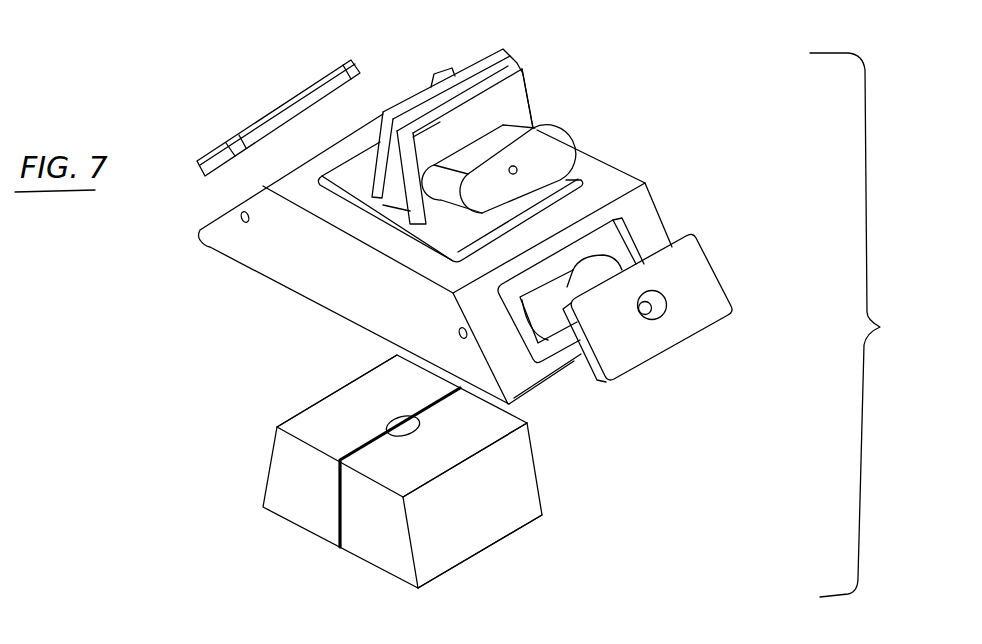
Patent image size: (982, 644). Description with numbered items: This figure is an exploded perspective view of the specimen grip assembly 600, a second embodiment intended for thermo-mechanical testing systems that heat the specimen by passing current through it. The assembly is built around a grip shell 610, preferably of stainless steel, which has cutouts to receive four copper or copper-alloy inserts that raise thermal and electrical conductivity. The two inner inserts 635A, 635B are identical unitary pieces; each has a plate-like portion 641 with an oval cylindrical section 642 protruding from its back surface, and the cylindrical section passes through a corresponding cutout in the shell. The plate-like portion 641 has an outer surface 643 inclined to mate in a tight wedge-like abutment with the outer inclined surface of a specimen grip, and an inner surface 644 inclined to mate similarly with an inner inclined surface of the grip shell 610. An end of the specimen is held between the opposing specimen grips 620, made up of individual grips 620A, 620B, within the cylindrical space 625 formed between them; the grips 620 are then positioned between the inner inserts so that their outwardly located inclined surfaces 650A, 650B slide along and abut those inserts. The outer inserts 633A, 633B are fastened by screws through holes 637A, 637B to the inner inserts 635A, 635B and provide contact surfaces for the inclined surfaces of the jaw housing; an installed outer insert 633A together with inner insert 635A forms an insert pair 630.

The specimen grip assembly 600 is at (920, 338).
The grip shell 610 is at (288, 253).
The specimen grips 620 is at (390, 475).
The individual grip 620A is at (466, 446).
The individual grip 620B is at (380, 411).
The cylindrical space 625 is at (405, 415).
The insert pair 630 is at (565, 160).
The outer insert 633A is at (647, 363).
The outer insert 633B is at (291, 98).
The inner insert 635A is at (508, 103).
The inner insert 635B is at (482, 50).
The hole 637A is at (664, 306).
The hole 637B is at (384, 112).
The plate-like portion 641 is at (470, 148).
The oval cylindrical section 642 is at (516, 197).
The outer surface 643 is at (402, 209).
The inner surface 644 is at (535, 120).
The inclined surface 650A is at (475, 512).
The inclined surface 650B is at (309, 402).